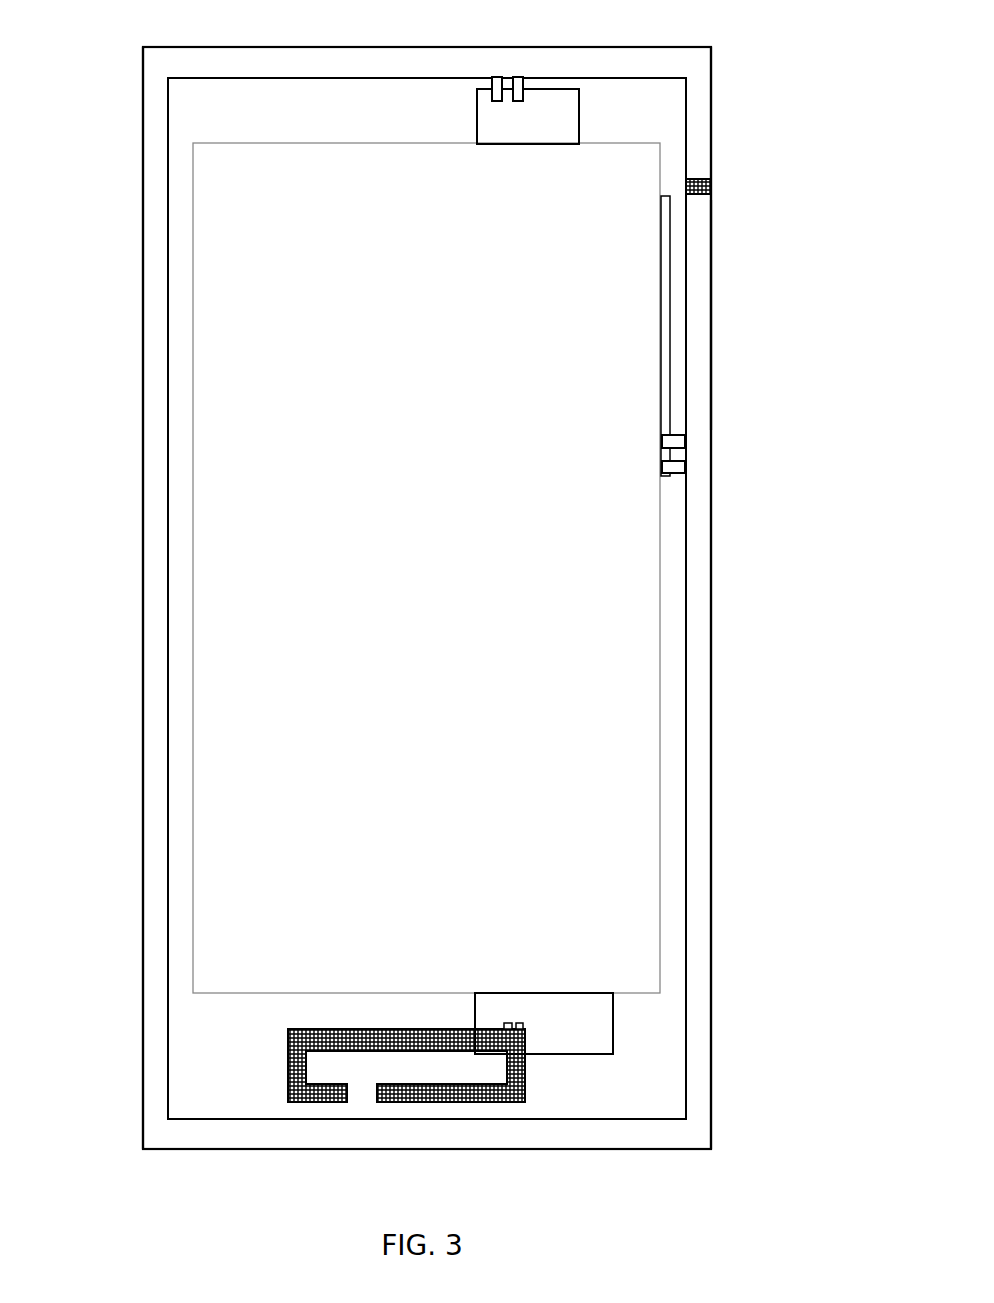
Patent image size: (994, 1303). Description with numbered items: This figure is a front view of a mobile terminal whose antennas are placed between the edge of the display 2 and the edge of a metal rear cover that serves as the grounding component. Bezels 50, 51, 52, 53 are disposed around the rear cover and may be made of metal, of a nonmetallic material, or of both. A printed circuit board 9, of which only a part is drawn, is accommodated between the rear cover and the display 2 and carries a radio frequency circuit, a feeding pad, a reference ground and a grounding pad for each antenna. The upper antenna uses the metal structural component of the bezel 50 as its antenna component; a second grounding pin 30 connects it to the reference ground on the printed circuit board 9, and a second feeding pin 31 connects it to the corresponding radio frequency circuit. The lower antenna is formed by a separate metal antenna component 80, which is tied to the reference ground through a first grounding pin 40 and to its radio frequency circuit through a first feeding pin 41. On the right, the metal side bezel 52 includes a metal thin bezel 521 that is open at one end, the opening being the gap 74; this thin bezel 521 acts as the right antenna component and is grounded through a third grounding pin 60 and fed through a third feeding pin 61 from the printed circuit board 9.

The display 2 is at (253, 366).
The printed circuit board 9 is at (560, 128).
The second grounding pin 30 is at (495, 101).
The second feeding pin 31 is at (518, 101).
The first grounding pin 40 is at (509, 1023).
The first feeding pin 41 is at (519, 1023).
The bezel 50 is at (262, 48).
The bezel 51 is at (202, 1150).
The side bezel 52 is at (710, 821).
The metal thin bezel 521 is at (704, 321).
The bezel 53 is at (143, 461).
The third grounding pin 60 is at (680, 440).
The third feeding pin 61 is at (680, 467).
The gap 74 is at (709, 187).
The antenna component 80 is at (334, 1029).